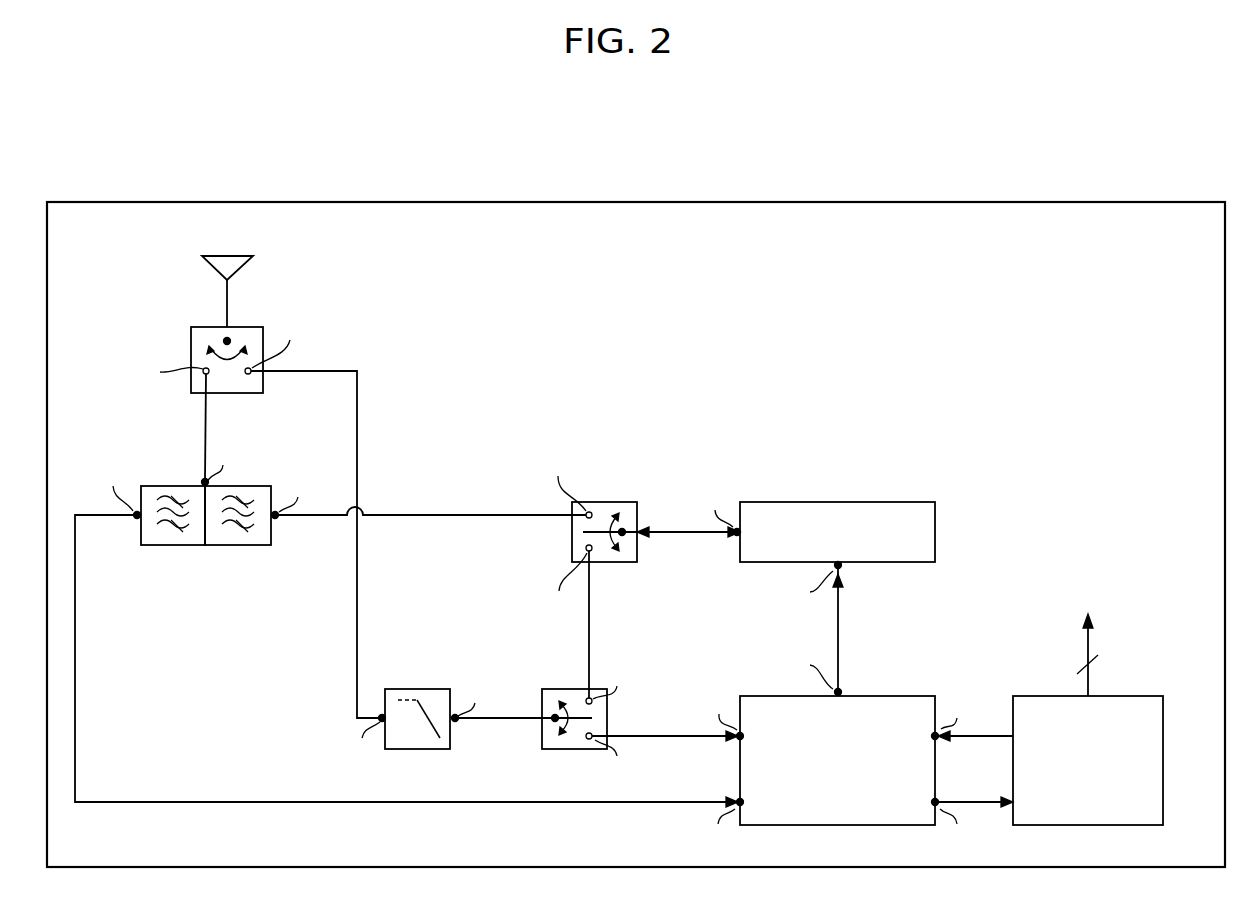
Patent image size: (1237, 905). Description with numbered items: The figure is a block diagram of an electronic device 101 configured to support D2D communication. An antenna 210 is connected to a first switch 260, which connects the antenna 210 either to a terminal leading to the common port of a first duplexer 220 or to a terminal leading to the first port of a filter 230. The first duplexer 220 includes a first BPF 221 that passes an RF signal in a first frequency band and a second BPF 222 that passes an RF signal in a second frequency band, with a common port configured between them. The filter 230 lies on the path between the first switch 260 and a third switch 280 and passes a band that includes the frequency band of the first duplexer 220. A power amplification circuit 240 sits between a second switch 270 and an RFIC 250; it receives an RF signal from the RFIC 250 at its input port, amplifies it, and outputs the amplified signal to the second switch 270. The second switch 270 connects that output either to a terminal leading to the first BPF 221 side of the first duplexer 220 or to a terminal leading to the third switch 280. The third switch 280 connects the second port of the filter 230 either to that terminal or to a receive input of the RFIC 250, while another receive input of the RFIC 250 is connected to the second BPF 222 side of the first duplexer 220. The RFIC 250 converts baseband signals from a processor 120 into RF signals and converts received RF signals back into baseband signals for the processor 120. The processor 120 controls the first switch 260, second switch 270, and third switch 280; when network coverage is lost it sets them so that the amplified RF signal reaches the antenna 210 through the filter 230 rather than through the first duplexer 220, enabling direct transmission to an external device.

The electronic device 101 is at (612, 202).
The antenna 210 is at (228, 257).
The first switch 260 is at (243, 327).
The first duplexer 220 is at (207, 553).
The first BPF 221 is at (248, 486).
The second BPF 222 is at (148, 486).
The filter 230 is at (418, 689).
The power amplification circuit 240 is at (855, 502).
The RFIC 250 is at (893, 696).
The second switch 270 is at (607, 502).
The third switch 280 is at (609, 722).
The processor 120 is at (1163, 757).